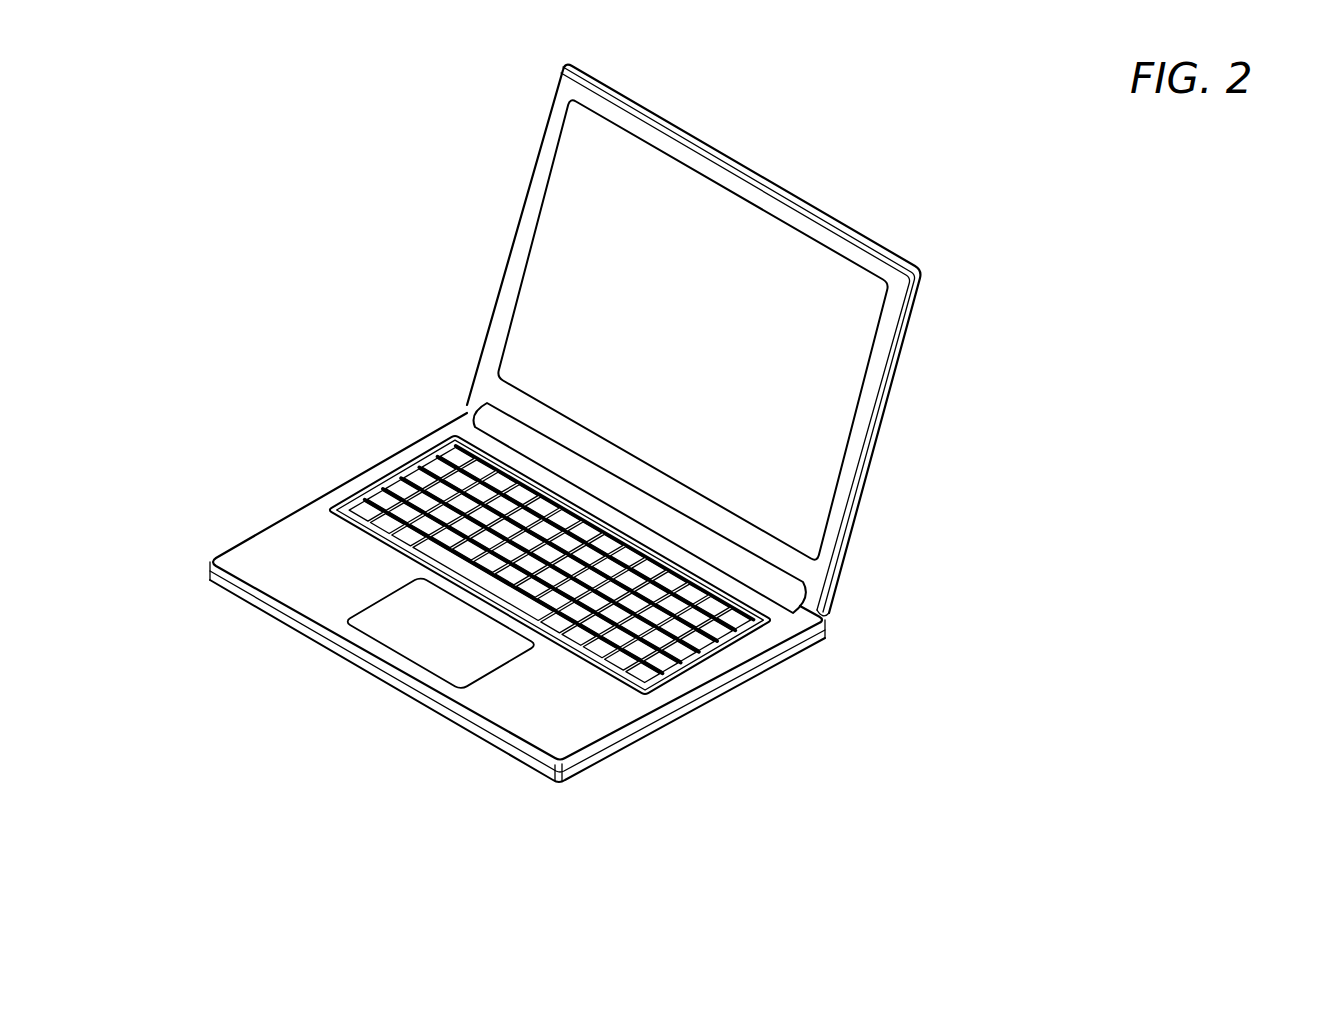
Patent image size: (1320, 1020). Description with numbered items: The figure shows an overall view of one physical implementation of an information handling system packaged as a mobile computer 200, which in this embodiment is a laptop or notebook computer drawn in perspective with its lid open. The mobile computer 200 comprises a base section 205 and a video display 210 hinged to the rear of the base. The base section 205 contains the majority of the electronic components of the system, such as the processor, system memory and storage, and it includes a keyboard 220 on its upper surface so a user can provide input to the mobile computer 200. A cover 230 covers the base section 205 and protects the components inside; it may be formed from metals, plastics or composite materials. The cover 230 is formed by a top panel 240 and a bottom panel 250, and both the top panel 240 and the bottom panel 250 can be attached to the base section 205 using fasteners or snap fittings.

The mobile computer 200 is at (623, 443).
The base section 205 is at (605, 589).
The video display 210 is at (766, 329).
The keyboard 220 is at (499, 520).
The cover 230 is at (517, 706).
The top panel 240 is at (607, 586).
The bottom panel 250 is at (547, 671).